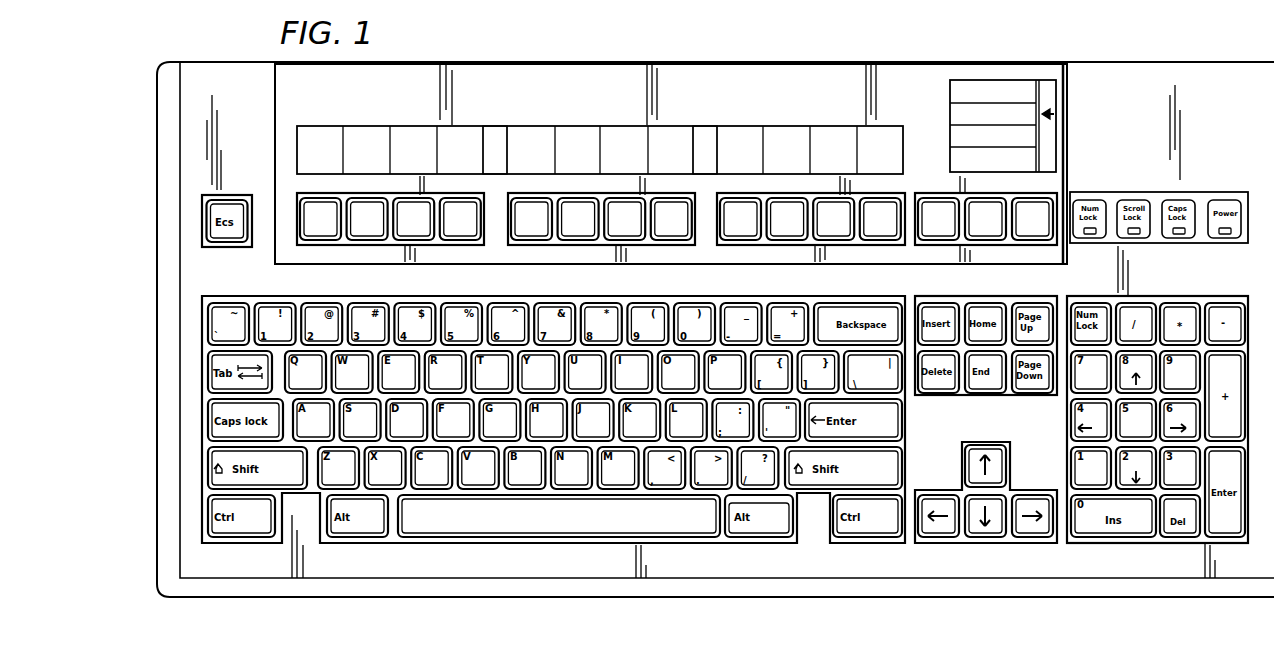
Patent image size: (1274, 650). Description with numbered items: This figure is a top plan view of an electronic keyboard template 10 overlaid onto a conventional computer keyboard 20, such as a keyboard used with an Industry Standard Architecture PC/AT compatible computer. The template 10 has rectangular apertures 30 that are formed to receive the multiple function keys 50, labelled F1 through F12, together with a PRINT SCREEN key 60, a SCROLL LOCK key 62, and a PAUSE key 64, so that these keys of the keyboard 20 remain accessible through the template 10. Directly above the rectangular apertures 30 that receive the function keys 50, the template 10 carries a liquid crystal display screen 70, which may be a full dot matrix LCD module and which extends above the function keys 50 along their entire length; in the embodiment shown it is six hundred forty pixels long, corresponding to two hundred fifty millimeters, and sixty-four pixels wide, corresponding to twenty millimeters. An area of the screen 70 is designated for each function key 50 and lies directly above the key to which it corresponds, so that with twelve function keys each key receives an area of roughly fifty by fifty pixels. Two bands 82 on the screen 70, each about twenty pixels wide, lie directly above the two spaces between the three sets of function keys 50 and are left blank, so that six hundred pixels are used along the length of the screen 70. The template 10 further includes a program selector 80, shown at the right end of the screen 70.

The electronic keyboard template 10 is at (1070, 83).
The computer keyboard 20 is at (1130, 563).
The rectangular apertures 30 is at (601, 243).
The function keys 50 is at (318, 236).
The PRINT SCREEN key 60 is at (933, 194).
The SCROLL LOCK key 62 is at (992, 236).
The PAUSE key 64 is at (1038, 200).
The liquid crystal display screen 70 is at (297, 135).
The program selector 80 is at (1045, 80).
The bands 82 is at (495, 137).